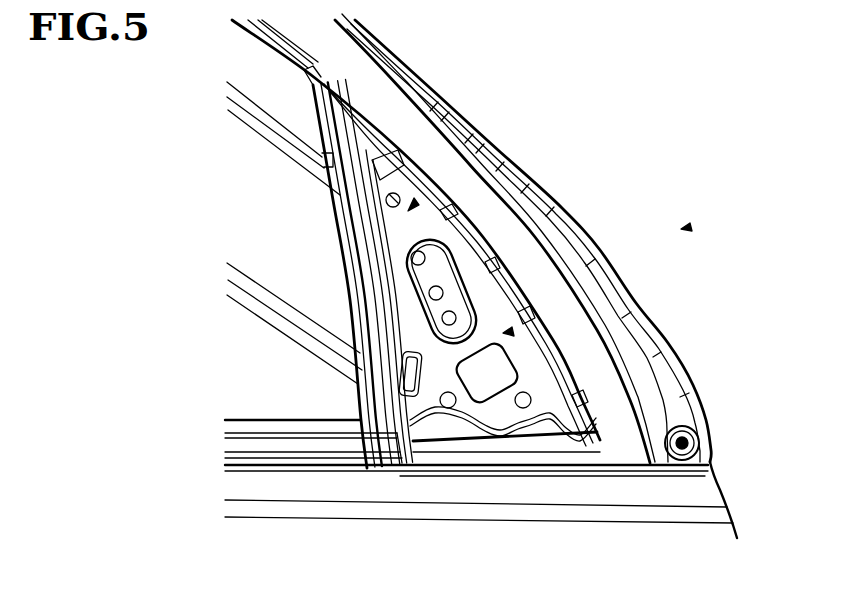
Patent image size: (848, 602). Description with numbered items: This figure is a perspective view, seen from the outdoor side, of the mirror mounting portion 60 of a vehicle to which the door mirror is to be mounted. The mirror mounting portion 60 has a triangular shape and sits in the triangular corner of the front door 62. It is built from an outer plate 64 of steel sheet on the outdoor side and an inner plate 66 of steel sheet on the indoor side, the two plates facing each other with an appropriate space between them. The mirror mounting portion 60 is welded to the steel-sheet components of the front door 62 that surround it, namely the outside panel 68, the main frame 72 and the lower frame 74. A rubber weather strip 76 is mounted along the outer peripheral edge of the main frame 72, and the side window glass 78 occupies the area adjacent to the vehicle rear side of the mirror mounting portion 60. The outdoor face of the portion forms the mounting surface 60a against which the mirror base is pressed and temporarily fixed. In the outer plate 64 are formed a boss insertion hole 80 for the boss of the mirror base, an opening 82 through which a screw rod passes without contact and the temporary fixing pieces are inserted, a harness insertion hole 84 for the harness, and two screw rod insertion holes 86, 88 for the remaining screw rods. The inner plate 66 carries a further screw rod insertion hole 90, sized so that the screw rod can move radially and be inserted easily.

The mirror mounting portion 60 is at (412, 208).
The mounting surface 60a is at (597, 316).
The front door 62 is at (688, 229).
The outer plate 64 is at (458, 256).
The inner plate 66 is at (420, 279).
The outside panel 68 is at (500, 492).
The main frame 72 is at (603, 370).
The lower frame 74 is at (356, 216).
The weather strip 76 is at (487, 150).
The side window glass 78 is at (270, 318).
The boss insertion hole 80 is at (395, 194).
The opening 82 is at (463, 293).
The harness insertion hole 84 is at (472, 388).
The screw rod insertion hole 86 is at (523, 408).
The screw rod insertion hole 88 is at (448, 408).
The screw rod insertion hole 90 is at (427, 257).